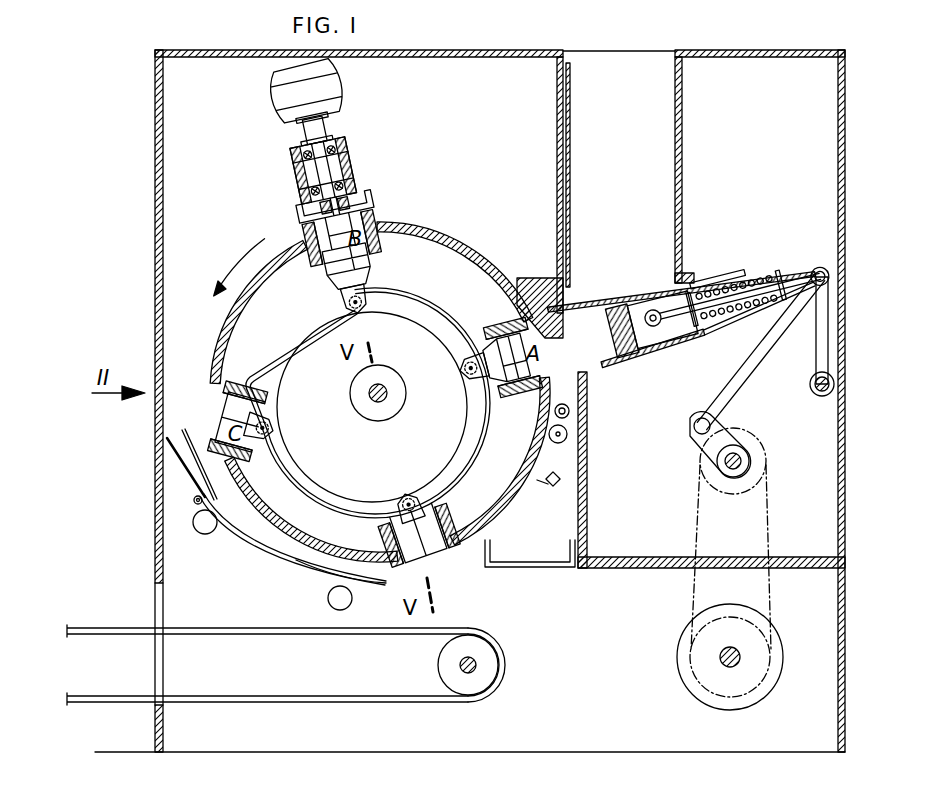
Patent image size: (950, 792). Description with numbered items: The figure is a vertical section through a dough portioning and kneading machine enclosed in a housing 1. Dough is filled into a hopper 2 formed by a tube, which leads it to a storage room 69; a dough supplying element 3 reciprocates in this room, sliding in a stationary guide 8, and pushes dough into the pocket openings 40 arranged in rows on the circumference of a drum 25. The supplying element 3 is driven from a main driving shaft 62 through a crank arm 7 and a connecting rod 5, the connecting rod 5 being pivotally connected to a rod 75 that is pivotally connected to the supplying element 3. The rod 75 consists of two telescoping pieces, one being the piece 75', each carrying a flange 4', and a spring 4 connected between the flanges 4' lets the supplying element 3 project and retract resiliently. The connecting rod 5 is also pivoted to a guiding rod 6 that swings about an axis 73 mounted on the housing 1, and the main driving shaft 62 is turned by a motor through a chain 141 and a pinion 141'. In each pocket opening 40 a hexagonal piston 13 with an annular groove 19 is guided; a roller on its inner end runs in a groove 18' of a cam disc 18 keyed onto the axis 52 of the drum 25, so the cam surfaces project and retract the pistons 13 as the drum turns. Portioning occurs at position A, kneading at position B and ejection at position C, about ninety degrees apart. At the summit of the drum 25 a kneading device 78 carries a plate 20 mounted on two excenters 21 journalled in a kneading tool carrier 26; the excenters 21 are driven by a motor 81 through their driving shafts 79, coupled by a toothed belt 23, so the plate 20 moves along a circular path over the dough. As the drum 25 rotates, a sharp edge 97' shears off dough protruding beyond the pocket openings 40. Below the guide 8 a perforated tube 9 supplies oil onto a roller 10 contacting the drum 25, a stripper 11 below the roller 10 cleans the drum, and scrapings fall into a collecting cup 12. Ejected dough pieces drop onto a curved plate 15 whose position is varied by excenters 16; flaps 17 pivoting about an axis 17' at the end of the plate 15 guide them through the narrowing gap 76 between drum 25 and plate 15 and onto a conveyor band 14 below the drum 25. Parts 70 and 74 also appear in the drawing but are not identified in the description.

The housing 1 is at (548, 48).
The hopper 2 is at (642, 72).
The dough supplying element 3 is at (705, 288).
The spring 4 is at (736, 278).
The flange 4' is at (717, 278).
The connecting rod 5 is at (758, 352).
The guiding rod 6 is at (828, 338).
The crank arm 7 is at (720, 437).
The guide 8 is at (690, 346).
The perforated tube 9 is at (572, 410).
The roller 10 is at (570, 436).
The stripper 11 is at (556, 488).
The collecting cup 12 is at (528, 561).
The piston 13 is at (372, 263).
The conveyor band 14 is at (92, 628).
The curved plate 15 is at (236, 540).
The excenters 16 is at (193, 523).
The flaps 17 is at (161, 467).
The axis 17' is at (167, 469).
The cam disc 18 is at (350, 407).
The groove 18' is at (368, 398).
The annular groove 19 is at (332, 290).
The plate 20 is at (378, 207).
The excenters 21 is at (350, 182).
The toothed belt 23 is at (326, 132).
The drum 25 is at (445, 234).
The kneading tool carrier 26 is at (346, 157).
The pocket openings 40 is at (317, 237).
The axis 52 is at (368, 393).
The main driving shaft 62 is at (758, 452).
The storage room 69 is at (560, 313).
The side wall 70 is at (155, 603).
The axis 73 is at (834, 384).
The partition wall 74 is at (843, 470).
The rod 75 is at (740, 279).
The piece of rod 75' is at (662, 340).
The gap 76 is at (288, 569).
The kneading device 78 is at (296, 174).
The driving shafts 79 is at (310, 182).
The motor 81 is at (328, 94).
The sharp edge 97' is at (685, 309).
The chain 141 is at (759, 557).
The pinion 141' is at (764, 466).